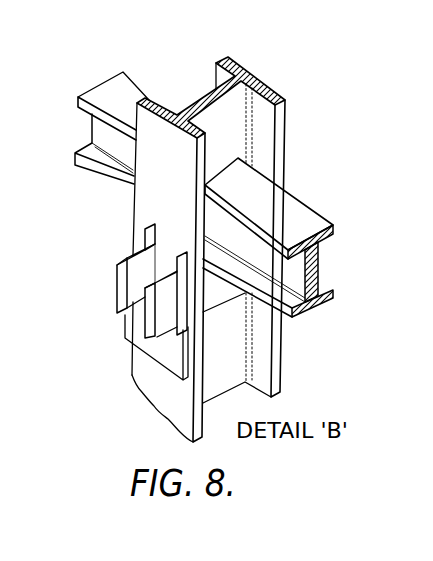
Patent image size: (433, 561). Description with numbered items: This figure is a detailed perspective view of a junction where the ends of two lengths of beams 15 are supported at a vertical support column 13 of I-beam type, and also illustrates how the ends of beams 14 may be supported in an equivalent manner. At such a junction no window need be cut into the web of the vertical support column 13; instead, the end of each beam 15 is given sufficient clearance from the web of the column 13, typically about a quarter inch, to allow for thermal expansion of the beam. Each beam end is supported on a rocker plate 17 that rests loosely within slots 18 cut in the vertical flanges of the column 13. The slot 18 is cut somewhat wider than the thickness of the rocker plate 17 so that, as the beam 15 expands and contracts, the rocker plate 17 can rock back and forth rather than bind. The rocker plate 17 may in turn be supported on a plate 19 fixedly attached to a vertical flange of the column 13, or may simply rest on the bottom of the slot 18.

The vertical support column 13 is at (268, 85).
The beam 14 is at (112, 91).
The beam 15 is at (300, 198).
The rocker plate 17 is at (112, 292).
The slot 18 is at (187, 255).
The plate 19 is at (132, 333).